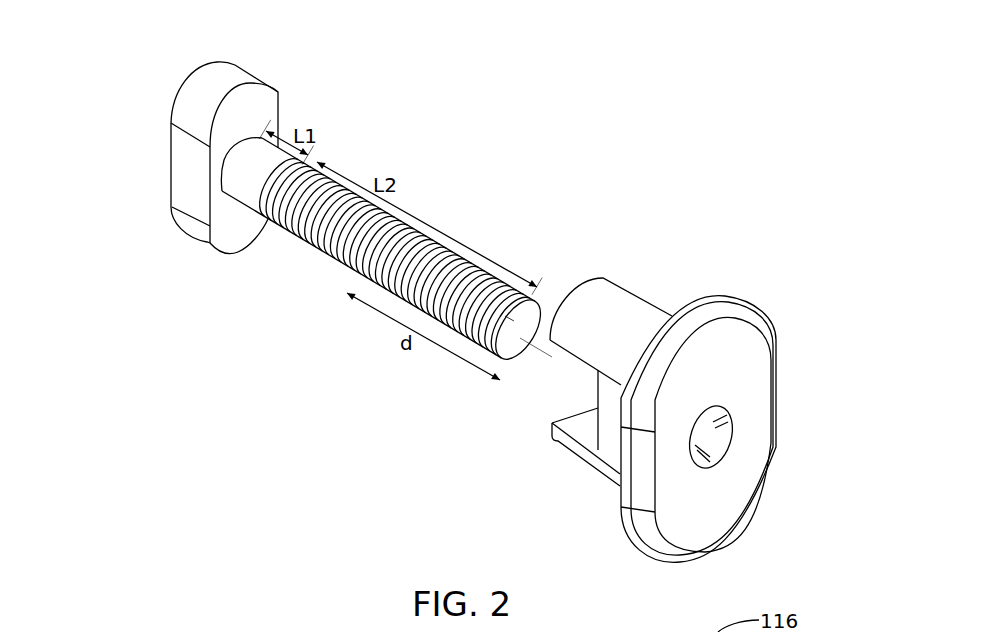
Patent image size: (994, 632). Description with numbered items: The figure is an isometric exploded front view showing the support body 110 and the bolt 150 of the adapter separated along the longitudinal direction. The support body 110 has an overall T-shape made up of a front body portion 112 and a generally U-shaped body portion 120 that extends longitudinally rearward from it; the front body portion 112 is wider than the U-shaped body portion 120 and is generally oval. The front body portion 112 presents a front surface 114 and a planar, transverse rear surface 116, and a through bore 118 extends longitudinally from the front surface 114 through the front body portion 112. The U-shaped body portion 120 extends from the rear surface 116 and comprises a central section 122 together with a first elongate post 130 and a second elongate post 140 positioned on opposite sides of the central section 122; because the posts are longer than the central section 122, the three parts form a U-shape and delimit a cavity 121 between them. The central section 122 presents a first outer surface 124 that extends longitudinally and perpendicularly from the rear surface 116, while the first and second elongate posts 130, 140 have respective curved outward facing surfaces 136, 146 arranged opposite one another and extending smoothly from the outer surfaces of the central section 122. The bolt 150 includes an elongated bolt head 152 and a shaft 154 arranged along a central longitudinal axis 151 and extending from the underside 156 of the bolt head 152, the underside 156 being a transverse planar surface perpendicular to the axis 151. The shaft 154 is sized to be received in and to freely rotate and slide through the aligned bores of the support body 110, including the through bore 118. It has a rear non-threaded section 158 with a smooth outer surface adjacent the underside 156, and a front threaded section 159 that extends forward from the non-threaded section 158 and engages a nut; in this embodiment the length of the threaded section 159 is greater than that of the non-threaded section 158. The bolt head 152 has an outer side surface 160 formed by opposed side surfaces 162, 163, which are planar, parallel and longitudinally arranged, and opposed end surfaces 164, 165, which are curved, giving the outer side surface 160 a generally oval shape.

The support body 110 is at (795, 239).
The front body portion 112 is at (773, 316).
The front surface 114 is at (735, 367).
The rear surface 116 is at (620, 514).
The through bore 118 is at (718, 437).
The U-shaped body portion 120 is at (637, 290).
The cavity 121 is at (570, 383).
The central section 122 is at (587, 404).
The first outer surface 124 is at (610, 425).
The first elongate post 130 is at (614, 280).
The outward facing surface 136 is at (625, 317).
The second elongate post 140 is at (567, 458).
The outward facing surface 146 is at (607, 465).
The bolt 150 is at (445, 180).
The central longitudinal axis 151 is at (345, 260).
The bolt head 152 is at (253, 62).
The shaft 154 is at (455, 237).
The underside 156 is at (258, 107).
The non-threaded section 158 is at (263, 207).
The threaded section 159 is at (293, 240).
The outer side surface 160 is at (185, 157).
The side surface 162 is at (184, 184).
The side surface 163 is at (280, 90).
The end surface 164 is at (218, 72).
The end surface 165 is at (230, 258).